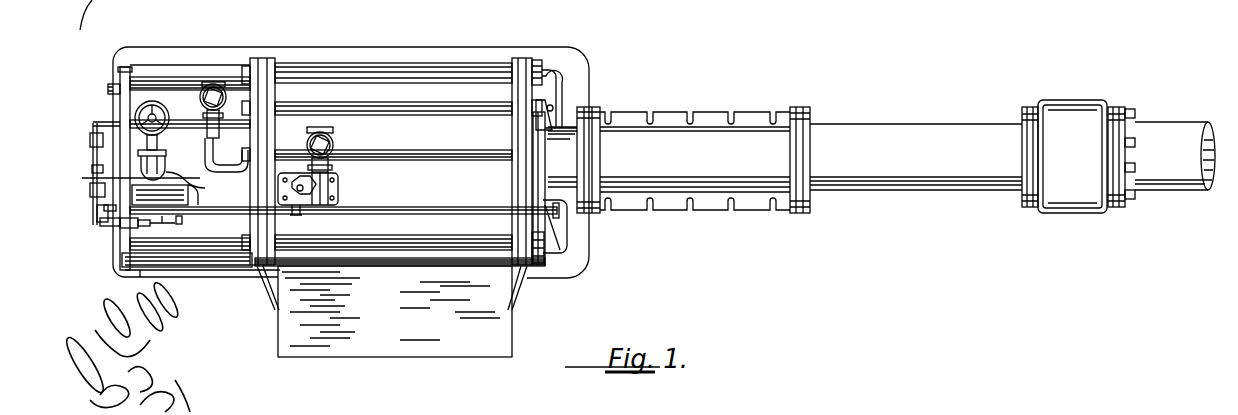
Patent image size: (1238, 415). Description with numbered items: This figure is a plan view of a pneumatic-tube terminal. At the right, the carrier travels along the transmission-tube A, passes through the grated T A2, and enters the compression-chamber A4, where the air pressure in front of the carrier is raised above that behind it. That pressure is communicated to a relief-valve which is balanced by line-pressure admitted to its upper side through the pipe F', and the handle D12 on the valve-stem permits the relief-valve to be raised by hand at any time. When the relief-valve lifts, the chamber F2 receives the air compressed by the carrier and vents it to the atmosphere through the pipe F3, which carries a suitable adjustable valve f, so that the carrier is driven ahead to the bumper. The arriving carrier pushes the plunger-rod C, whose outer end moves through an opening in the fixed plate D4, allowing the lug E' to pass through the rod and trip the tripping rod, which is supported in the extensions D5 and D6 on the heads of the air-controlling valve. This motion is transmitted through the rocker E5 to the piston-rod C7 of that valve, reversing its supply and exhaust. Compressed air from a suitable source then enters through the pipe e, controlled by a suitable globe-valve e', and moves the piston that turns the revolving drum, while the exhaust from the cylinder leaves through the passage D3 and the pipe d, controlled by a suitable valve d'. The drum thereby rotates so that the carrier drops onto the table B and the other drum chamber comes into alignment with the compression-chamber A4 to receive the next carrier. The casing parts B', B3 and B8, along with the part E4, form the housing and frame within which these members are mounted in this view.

The transmission-tube A is at (1175, 156).
The grated T A2 is at (1078, 156).
The compression-chamber A4 is at (785, 160).
The table B is at (395, 311).
The pipe B' is at (559, 104).
The casing B3 is at (478, 48).
The casing wall B8 is at (283, 82).
The plunger-rod C is at (202, 177).
The piston-rod C7 is at (179, 224).
The passage D3 is at (168, 136).
The fixed plate D4 is at (92, 136).
The extension D5 is at (104, 212).
The extension D6 is at (100, 121).
The handle D12 is at (296, 214).
The lug E' is at (96, 227).
The lever arm E4 is at (122, 226).
The rocker E5 is at (145, 226).
The pipe F' is at (344, 199).
The chamber F2 is at (325, 206).
The pipe F3 is at (306, 160).
The pipe d is at (226, 155).
The valve d' is at (213, 92).
The pipe e is at (131, 161).
The globe-valve e' is at (163, 98).
The adjustable valve f is at (333, 140).